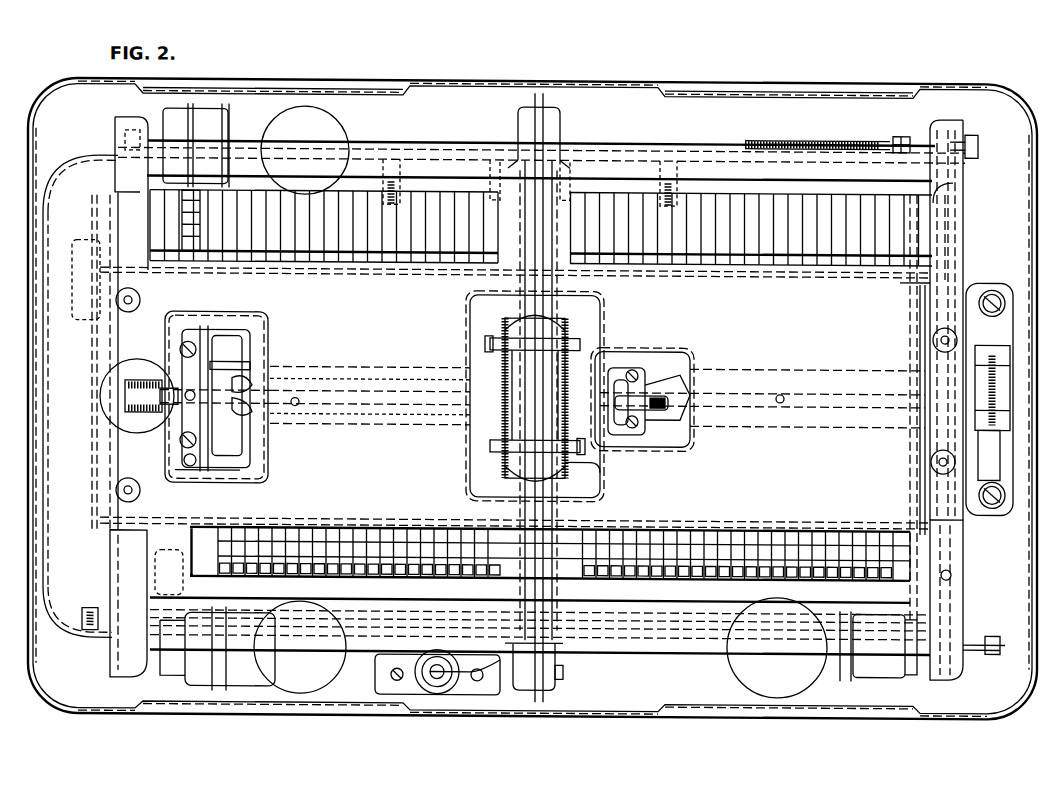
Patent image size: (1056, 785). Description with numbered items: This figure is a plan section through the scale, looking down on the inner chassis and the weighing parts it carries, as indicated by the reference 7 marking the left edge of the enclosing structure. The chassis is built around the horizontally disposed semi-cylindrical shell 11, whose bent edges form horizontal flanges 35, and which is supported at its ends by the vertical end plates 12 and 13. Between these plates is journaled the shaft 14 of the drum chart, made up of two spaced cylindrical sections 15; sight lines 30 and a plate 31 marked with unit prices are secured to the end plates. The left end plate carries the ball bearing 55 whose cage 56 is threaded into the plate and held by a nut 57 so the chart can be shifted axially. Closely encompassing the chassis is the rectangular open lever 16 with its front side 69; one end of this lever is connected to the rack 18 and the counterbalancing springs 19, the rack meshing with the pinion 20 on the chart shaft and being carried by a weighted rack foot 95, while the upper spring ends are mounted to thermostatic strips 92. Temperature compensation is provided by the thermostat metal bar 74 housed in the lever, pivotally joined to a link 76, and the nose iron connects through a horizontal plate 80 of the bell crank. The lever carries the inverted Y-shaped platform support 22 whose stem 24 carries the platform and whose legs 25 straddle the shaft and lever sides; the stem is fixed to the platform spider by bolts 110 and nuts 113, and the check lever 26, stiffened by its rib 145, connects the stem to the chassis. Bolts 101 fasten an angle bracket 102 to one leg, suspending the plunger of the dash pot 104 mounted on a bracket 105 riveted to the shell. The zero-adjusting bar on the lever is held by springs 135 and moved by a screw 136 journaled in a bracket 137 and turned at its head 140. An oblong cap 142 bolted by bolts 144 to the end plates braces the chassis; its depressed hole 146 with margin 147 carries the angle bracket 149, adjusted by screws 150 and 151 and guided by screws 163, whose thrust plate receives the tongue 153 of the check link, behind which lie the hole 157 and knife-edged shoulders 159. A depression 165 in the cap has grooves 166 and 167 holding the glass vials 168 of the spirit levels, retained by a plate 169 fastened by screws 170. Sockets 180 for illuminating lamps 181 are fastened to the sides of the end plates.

The case 7 is at (30, 535).
The semi-cylindrical shell 11 is at (422, 183).
The end plate 12 is at (125, 136).
The end plate 13 is at (963, 178).
The shaft 14 is at (826, 388).
The cylindrical sections 15 is at (447, 193).
The lever 16 is at (563, 143).
The rack 18 is at (1010, 312).
The counterbalancing springs 19 is at (1005, 515).
The pinion 20 is at (1005, 425).
The platform support 22 is at (517, 115).
The stem 24 is at (565, 370).
The legs 25 is at (560, 125).
The check lever 26 is at (257, 378).
The sight lines 30 is at (370, 270).
The plate 31 is at (385, 580).
The horizontal flanges 35 is at (473, 143).
The ball bearing 55 is at (125, 405).
The ball bearing cage 56 is at (163, 387).
The nut 57 is at (125, 380).
The front side 69 is at (955, 225).
The thermostat metal bar 74 is at (110, 573).
The link 76 is at (968, 652).
The horizontal plate 80 is at (963, 577).
The thermostatic metal strips 92 is at (986, 290).
The rack foot 95 is at (940, 355).
The bolts 101 is at (562, 672).
The angle bracket 102 is at (470, 688).
The dash pot 104 is at (438, 700).
The bracket 105 is at (380, 645).
The bolts 110 is at (500, 448).
The nuts 113 is at (605, 470).
The springs 135 is at (395, 178).
The screw 136 is at (845, 141).
The bracket 137 is at (925, 140).
The head 140 is at (972, 138).
The cap 142 is at (900, 283).
The bolts 144 is at (932, 343).
The rib 145 is at (392, 392).
The hole 146 is at (262, 468).
The margin 147 is at (190, 472).
The angle bracket 149 is at (180, 425).
The screws 150 is at (196, 330).
The screw 151 is at (184, 342).
The tongue 153 is at (195, 372).
The hole 157 is at (220, 398).
The knife edged shoulders 159 is at (232, 363).
The screws 163 is at (228, 330).
The depression 165 is at (612, 447).
The groove 166 is at (605, 400).
The groove 167 is at (665, 385).
The glass vials 168 is at (605, 410).
The plate 169 is at (668, 405).
The screws 170 is at (634, 370).
The sockets 180 is at (178, 123).
The illuminating lamps 181 is at (338, 125).